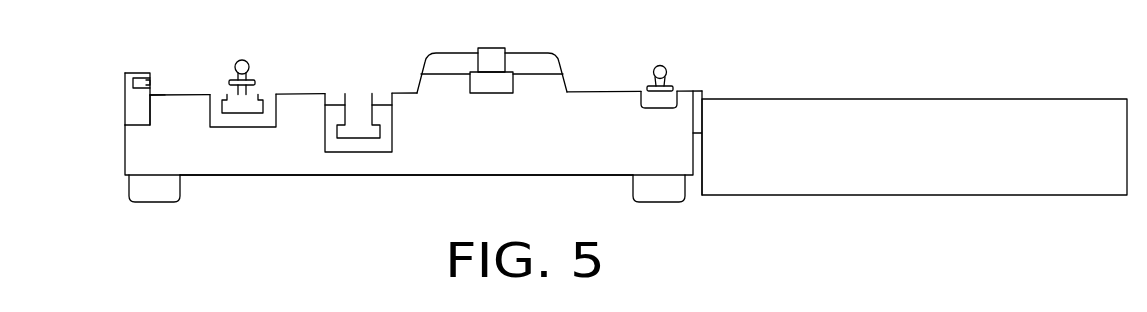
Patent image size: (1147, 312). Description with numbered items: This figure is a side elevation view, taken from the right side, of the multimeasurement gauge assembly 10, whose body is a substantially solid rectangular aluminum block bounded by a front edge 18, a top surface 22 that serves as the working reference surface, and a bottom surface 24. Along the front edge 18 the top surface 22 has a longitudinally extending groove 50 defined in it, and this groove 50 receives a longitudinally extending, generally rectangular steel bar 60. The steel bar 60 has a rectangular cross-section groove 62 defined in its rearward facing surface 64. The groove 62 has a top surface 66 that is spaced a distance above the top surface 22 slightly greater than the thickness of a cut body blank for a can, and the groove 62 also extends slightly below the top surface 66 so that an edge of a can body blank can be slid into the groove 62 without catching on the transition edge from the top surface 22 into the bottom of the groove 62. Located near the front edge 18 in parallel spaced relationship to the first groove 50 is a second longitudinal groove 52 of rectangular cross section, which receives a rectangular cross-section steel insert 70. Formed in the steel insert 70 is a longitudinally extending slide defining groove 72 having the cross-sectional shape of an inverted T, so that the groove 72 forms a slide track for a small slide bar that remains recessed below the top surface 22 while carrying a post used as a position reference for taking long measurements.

The multimeasurement gauge assembly 10 is at (342, 176).
The front edge 18 is at (125, 147).
The top surface 22 is at (605, 92).
The bottom surface 24 is at (497, 176).
The longitudinally extending groove 50 is at (158, 102).
The second longitudinal groove 52 is at (276, 113).
The steel bar 60 is at (125, 98).
The groove 62 is at (142, 73).
The rearward facing surface 64 is at (151, 104).
The top surface 66 is at (150, 82).
The steel insert 70 is at (383, 93).
The slide defining groove 72 is at (372, 97).